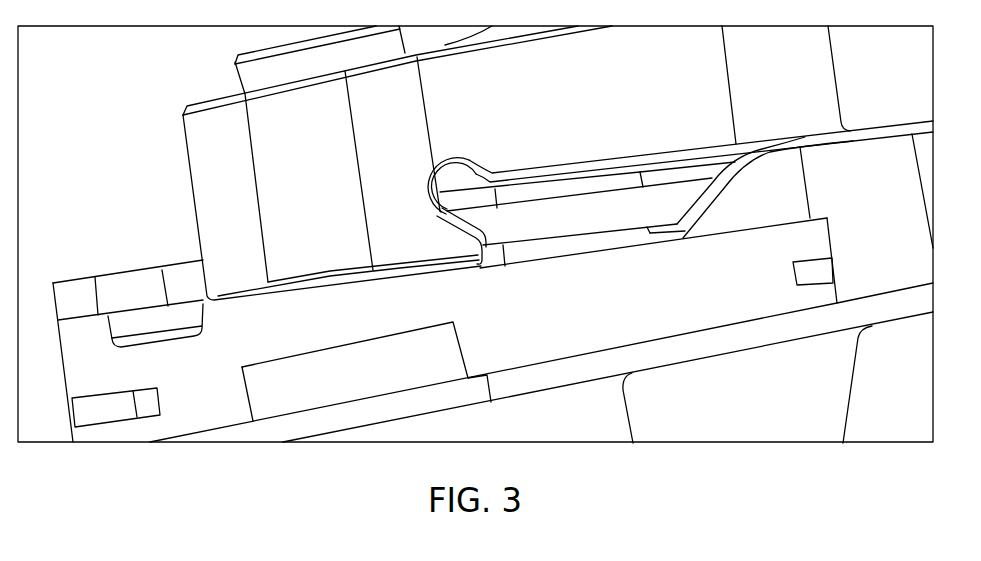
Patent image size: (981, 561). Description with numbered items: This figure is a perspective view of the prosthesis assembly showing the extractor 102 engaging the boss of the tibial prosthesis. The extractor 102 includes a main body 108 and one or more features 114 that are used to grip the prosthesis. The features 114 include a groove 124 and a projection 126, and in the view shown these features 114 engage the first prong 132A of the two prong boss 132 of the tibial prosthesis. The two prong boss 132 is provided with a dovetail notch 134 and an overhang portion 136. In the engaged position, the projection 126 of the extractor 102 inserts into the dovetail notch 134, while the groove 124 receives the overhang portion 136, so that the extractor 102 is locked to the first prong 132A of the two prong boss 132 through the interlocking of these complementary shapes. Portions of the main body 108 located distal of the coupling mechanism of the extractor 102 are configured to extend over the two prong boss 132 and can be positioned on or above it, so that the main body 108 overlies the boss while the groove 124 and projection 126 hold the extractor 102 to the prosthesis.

The extractor 102 is at (183, 98).
The main body 108 is at (232, 210).
The one or more features 114 is at (451, 234).
The groove 124 is at (477, 164).
The projection 126 is at (481, 262).
The two prong boss 132 is at (452, 202).
The first prong 132A is at (587, 185).
The dovetail notch 134 is at (500, 228).
The overhang portion 136 is at (473, 205).